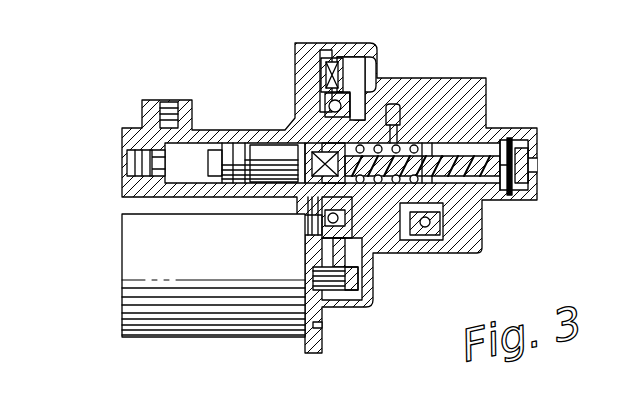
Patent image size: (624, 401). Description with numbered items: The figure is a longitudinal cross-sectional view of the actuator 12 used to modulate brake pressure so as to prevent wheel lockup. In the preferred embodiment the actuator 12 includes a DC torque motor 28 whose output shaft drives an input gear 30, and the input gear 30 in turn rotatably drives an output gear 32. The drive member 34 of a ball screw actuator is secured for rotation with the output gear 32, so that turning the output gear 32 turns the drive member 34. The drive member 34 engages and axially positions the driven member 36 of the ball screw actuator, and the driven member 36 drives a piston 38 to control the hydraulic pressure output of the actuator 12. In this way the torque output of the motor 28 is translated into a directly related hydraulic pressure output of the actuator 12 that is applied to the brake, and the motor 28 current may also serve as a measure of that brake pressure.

The actuator 12 is at (104, 120).
The DC torque motor 28 is at (133, 273).
The input gear 30 is at (348, 290).
The output gear 32 is at (345, 56).
The drive member 34 is at (386, 95).
The driven member 36 is at (497, 200).
The piston 38 is at (262, 150).